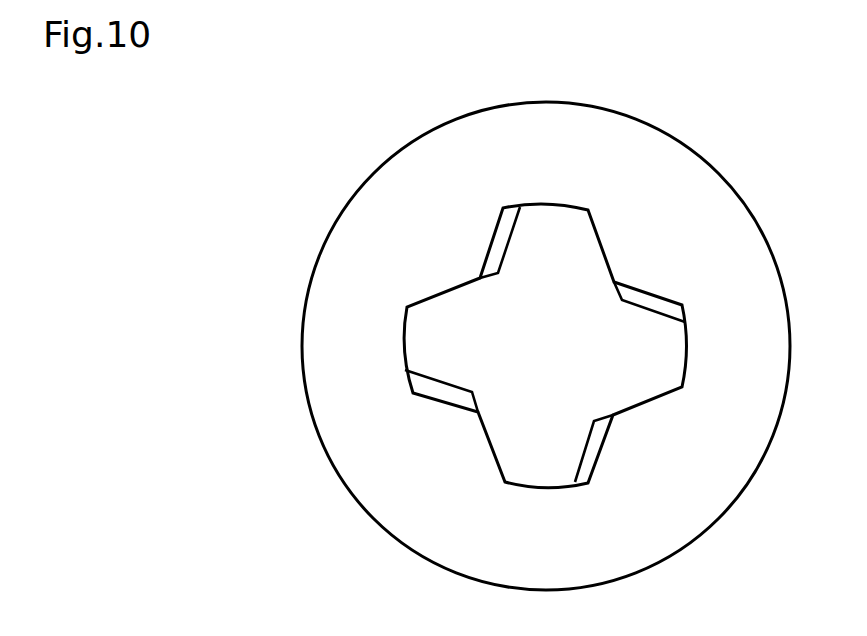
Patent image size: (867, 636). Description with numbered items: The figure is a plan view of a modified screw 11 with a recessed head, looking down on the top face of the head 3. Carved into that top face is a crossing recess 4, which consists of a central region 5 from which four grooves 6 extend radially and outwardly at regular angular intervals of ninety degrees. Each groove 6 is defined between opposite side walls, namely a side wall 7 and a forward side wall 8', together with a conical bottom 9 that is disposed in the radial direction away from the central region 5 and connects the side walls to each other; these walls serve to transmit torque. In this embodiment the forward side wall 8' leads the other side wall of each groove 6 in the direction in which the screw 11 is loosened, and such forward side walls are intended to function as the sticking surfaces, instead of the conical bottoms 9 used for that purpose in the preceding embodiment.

The head 3 is at (757, 258).
The crossing recess 4 is at (594, 304).
The central region 5 is at (517, 367).
The groove 6 is at (555, 238).
The side wall 7 is at (598, 238).
The forward side wall 8' is at (555, 363).
The conical bottom 9 is at (535, 212).
The screw 11 is at (529, 346).